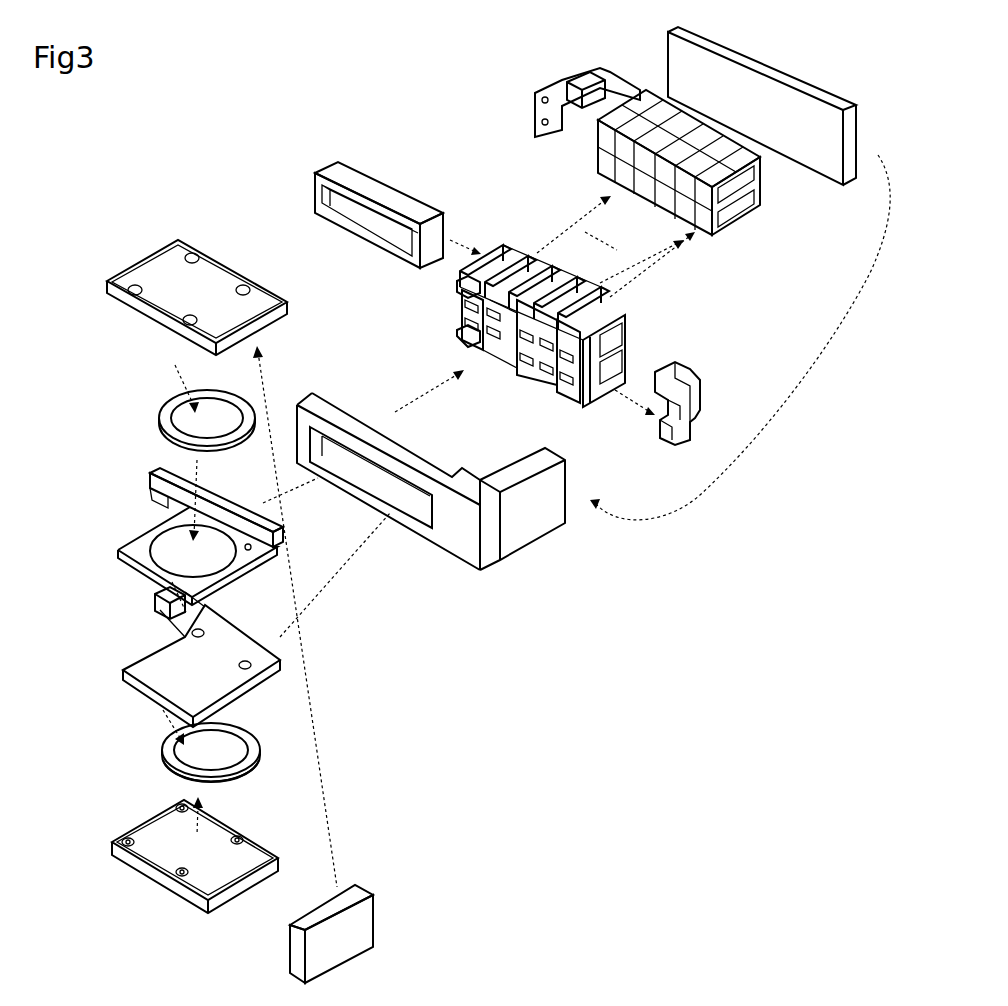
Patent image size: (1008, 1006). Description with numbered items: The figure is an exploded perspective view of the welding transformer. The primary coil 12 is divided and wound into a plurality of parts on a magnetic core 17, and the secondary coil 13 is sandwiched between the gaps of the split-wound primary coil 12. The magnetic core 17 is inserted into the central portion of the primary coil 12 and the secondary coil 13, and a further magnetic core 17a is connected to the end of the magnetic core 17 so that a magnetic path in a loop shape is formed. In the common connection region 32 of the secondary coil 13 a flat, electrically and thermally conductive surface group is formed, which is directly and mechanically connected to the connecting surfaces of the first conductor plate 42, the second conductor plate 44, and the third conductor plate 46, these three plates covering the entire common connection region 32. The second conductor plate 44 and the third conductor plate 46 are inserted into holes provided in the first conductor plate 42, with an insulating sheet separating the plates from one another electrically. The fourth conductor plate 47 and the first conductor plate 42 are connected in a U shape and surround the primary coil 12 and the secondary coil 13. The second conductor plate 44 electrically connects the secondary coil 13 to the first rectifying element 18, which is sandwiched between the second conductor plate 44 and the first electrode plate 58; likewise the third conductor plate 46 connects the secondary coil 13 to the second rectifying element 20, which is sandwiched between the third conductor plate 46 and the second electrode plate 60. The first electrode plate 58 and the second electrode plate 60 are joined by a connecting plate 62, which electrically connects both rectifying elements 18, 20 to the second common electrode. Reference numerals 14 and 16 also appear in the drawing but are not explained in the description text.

The primary coil 12 is at (758, 242).
The secondary coil 13 is at (517, 274).
The connector housing 14 is at (640, 323).
The connector end wall 16 is at (630, 377).
The magnetic core 17 is at (300, 155).
The magnetic core 17a is at (708, 389).
The first rectifying element 18 is at (160, 415).
The second rectifying element 20 is at (240, 752).
The common connection region 32 is at (448, 312).
The first conductor plate 42 is at (513, 530).
The second conductor plate 44 is at (132, 525).
The third conductor plate 46 is at (132, 631).
The fourth conductor plate 47 is at (800, 76).
The first electrode plate 58 is at (135, 272).
The second electrode plate 60 is at (220, 826).
The connecting plate 62 is at (340, 932).